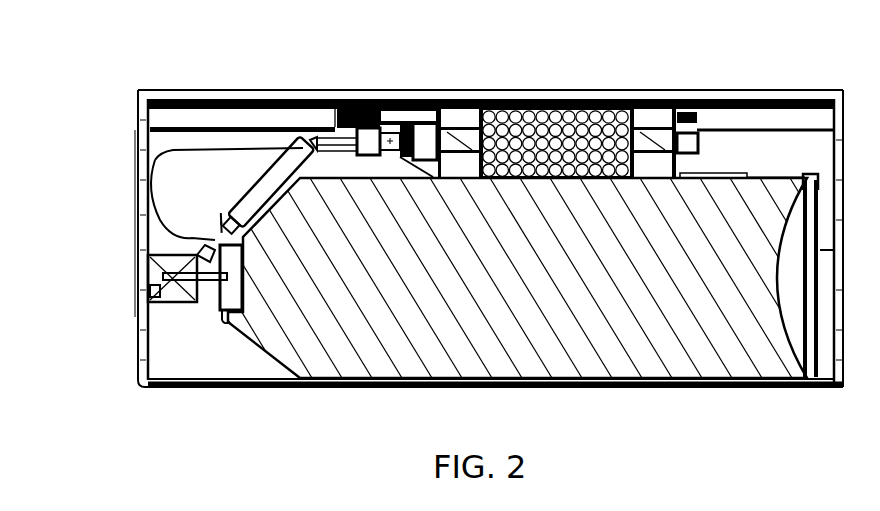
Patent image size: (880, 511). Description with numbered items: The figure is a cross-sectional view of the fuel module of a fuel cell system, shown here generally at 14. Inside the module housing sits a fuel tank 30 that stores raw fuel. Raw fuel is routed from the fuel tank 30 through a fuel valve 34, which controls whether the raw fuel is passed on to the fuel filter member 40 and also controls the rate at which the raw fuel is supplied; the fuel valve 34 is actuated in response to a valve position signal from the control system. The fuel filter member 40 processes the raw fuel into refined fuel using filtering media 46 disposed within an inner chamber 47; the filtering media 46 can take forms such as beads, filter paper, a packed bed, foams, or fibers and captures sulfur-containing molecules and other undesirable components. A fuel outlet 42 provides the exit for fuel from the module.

The gas inflation device housing 14 is at (103, 90).
The fuel tank 30 is at (318, 360).
The fuel valve 34 is at (234, 205).
The fuel filter member 40 is at (655, 120).
The fuel outlet 42 is at (148, 255).
The filtering media 46 is at (604, 100).
The inner chamber 47 is at (530, 108).